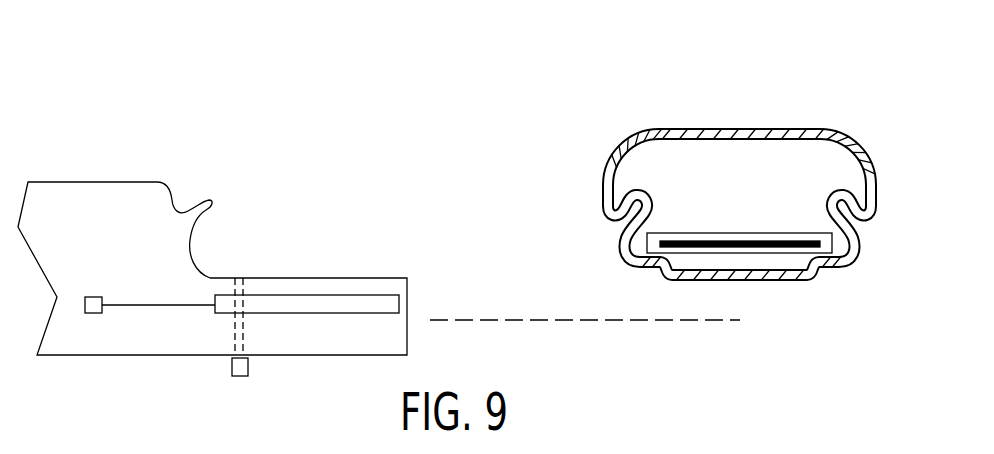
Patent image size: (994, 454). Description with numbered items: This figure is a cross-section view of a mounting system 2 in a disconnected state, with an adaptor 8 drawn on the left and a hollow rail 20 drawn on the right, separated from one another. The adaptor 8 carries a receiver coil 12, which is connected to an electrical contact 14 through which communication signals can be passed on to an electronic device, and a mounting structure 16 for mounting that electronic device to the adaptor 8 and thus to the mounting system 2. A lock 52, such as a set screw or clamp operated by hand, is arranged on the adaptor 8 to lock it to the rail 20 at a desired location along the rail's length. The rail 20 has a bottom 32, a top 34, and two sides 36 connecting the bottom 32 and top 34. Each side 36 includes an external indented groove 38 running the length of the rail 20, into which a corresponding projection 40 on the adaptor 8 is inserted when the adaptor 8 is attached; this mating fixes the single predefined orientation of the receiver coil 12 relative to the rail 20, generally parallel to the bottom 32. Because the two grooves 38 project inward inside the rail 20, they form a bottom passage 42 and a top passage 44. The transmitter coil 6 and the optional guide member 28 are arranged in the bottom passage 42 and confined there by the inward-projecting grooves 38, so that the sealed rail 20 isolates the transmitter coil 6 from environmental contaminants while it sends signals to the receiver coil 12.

The mounting system 2 is at (325, 138).
The transmitter coil 6 is at (747, 245).
The adaptor 8 is at (98, 208).
The receiver coil 12 is at (302, 295).
The electrical contact 14 is at (93, 313).
The mounting structure 16 is at (337, 86).
The rail 20 is at (697, 130).
The guide member 28 is at (838, 243).
The bottom 32 is at (783, 290).
The top 34 is at (766, 121).
The side 36 is at (590, 190).
The groove 38 is at (615, 223).
The projection 40 is at (209, 201).
The bottom passage 42 is at (619, 255).
The top passage 44 is at (669, 161).
The lock 52 is at (243, 377).